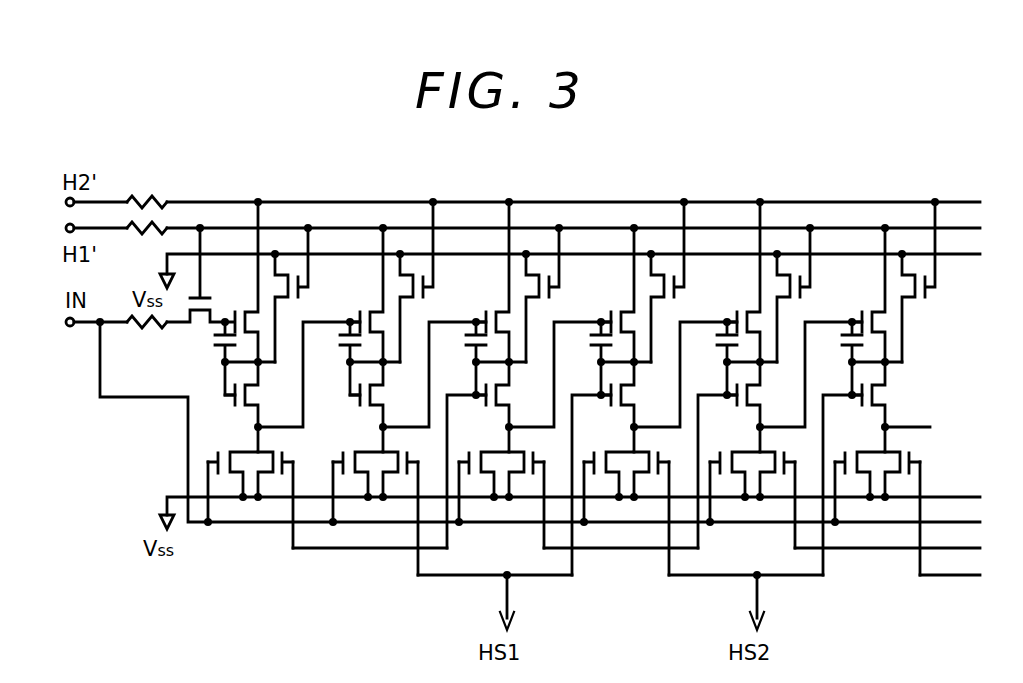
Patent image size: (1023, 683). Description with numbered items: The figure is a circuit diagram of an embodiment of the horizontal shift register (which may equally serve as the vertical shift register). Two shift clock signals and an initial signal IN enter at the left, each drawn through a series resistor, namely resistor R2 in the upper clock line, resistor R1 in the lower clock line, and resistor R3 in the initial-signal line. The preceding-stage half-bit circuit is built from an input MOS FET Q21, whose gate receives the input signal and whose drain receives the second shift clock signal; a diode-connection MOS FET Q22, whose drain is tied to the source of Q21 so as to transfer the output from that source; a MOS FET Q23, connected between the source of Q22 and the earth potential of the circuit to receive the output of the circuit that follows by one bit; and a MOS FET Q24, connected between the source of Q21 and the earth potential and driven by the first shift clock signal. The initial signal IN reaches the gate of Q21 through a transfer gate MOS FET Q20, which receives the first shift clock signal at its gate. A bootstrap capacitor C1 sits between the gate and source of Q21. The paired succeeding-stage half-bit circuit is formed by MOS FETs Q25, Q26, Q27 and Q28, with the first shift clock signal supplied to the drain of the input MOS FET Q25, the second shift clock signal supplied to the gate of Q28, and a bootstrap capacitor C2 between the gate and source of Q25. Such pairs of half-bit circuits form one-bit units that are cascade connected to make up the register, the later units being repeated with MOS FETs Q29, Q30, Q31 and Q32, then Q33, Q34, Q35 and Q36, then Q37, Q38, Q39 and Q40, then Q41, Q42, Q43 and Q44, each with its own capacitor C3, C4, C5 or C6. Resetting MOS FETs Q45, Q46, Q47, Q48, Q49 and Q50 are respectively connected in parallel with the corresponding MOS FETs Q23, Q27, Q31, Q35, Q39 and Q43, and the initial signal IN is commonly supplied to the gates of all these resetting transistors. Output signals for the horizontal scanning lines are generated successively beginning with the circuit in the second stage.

The resistor R1 is at (147, 244).
The resistor R2 is at (147, 189).
The resistor R3 is at (144, 339).
The transfer gate MOS FET Q20 is at (183, 308).
The input MOS FET Q21 is at (286, 282).
The diode-connection MOS FET Q22 is at (233, 396).
The MOS FET Q23 is at (287, 466).
The MOS FET Q24 is at (258, 293).
The input MOS FET Q25 is at (409, 295).
The MOS FET Q26 is at (358, 396).
The MOS FET Q27 is at (412, 466).
The MOS FET Q28 is at (383, 280).
The transistor Q29 is at (535, 282).
The transistor Q30 is at (484, 396).
The MOS FET Q31 is at (538, 466).
The transistor Q32 is at (509, 293).
The transistor Q33 is at (660, 295).
The transistor Q34 is at (609, 396).
The MOS FET Q35 is at (663, 466).
The transistor Q36 is at (634, 280).
The transistor Q37 is at (786, 282).
The transistor Q38 is at (735, 396).
The MOS FET Q39 is at (789, 466).
The transistor Q40 is at (760, 293).
The transistor Q41 is at (911, 295).
The transistor Q42 is at (860, 396).
The MOS FET Q43 is at (914, 466).
The transistor Q44 is at (885, 280).
The resetting MOS FET Q45 is at (238, 476).
The resetting MOS FET Q46 is at (363, 476).
The resetting MOS FET Q47 is at (489, 476).
The resetting MOS FET Q48 is at (614, 476).
The resetting MOS FET Q49 is at (740, 476).
The resetting MOS FET Q50 is at (865, 476).
The bootstrap capacitor C1 is at (211, 347).
The bootstrap capacitor C2 is at (336, 347).
The capacitor C3 is at (462, 347).
The capacitor C4 is at (587, 347).
The capacitor C5 is at (713, 347).
The capacitor C6 is at (838, 347).